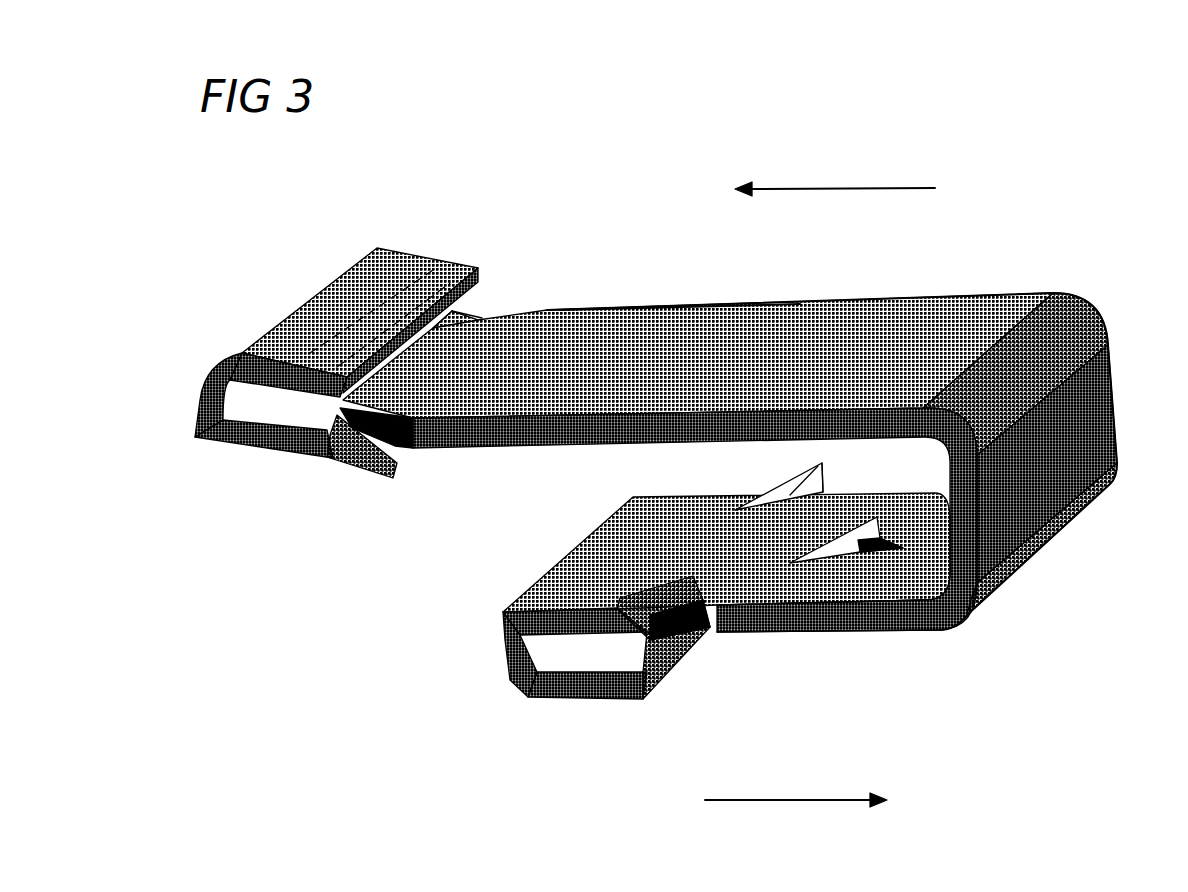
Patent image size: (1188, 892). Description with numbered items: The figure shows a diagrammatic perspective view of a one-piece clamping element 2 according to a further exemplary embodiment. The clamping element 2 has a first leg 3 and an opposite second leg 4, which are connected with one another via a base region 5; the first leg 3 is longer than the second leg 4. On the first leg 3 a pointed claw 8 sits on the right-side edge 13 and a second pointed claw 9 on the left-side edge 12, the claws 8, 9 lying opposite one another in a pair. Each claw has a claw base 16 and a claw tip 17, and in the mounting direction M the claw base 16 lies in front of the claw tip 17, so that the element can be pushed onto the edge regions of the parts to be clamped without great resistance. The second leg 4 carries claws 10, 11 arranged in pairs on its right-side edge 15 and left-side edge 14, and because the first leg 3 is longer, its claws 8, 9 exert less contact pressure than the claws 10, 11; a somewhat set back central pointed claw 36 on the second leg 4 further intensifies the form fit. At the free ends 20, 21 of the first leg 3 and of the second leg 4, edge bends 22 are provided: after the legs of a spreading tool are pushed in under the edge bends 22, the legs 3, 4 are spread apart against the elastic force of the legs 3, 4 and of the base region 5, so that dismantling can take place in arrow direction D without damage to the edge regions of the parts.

The clamping element 2 is at (1082, 197).
The first leg 3 is at (818, 312).
The second leg 4 is at (880, 632).
The base region 5 is at (1092, 411).
The pointed claw 8 is at (462, 321).
The second pointed claw 9 is at (345, 476).
The claw 10 is at (790, 478).
The claw 11 is at (693, 645).
The left-side edge 12 is at (490, 462).
The right-side edge 13 is at (612, 297).
The left-side edge 14 is at (727, 624).
The right-side edge 15 is at (677, 501).
The claw base 16 is at (300, 443).
The claw tip 17 is at (398, 485).
The free end 20 is at (203, 420).
The free end 21 is at (492, 625).
The edge bend 22 is at (535, 700).
The central pointed claw 36 is at (842, 552).
The mounting direction M is at (802, 193).
The arrow direction D is at (819, 802).